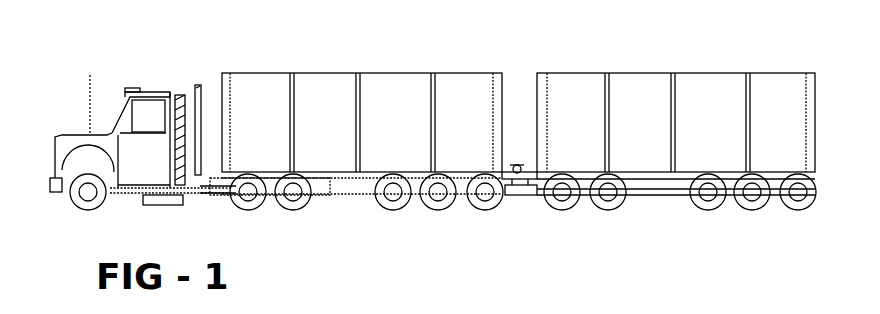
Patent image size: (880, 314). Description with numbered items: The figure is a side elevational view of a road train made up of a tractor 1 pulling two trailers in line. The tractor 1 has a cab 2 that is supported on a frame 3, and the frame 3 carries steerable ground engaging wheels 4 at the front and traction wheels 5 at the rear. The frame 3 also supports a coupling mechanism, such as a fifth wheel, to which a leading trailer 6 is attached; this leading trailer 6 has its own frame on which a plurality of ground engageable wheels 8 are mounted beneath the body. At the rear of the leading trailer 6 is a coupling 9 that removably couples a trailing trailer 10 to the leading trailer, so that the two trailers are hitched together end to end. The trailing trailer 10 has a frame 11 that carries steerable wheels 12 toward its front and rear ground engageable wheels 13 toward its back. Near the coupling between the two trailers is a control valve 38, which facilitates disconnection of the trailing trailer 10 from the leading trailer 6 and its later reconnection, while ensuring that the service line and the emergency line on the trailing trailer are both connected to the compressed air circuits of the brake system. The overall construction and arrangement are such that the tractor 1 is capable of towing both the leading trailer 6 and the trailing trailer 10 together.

The tractor 1 is at (149, 64).
The cab 2 is at (177, 92).
The frame 3 is at (222, 198).
The steerable ground engaging wheels 4 is at (88, 214).
The traction wheels 5 is at (236, 208).
The leading trailer 6 is at (315, 44).
The ground engageable wheels 8 is at (383, 210).
The coupling 9 is at (516, 197).
The control valve 38 is at (516, 150).
The trailing trailer 10 is at (643, 56).
The frame 11 is at (655, 196).
The steerable wheels 12 is at (553, 208).
The rear ground engageable wheels 13 is at (698, 210).